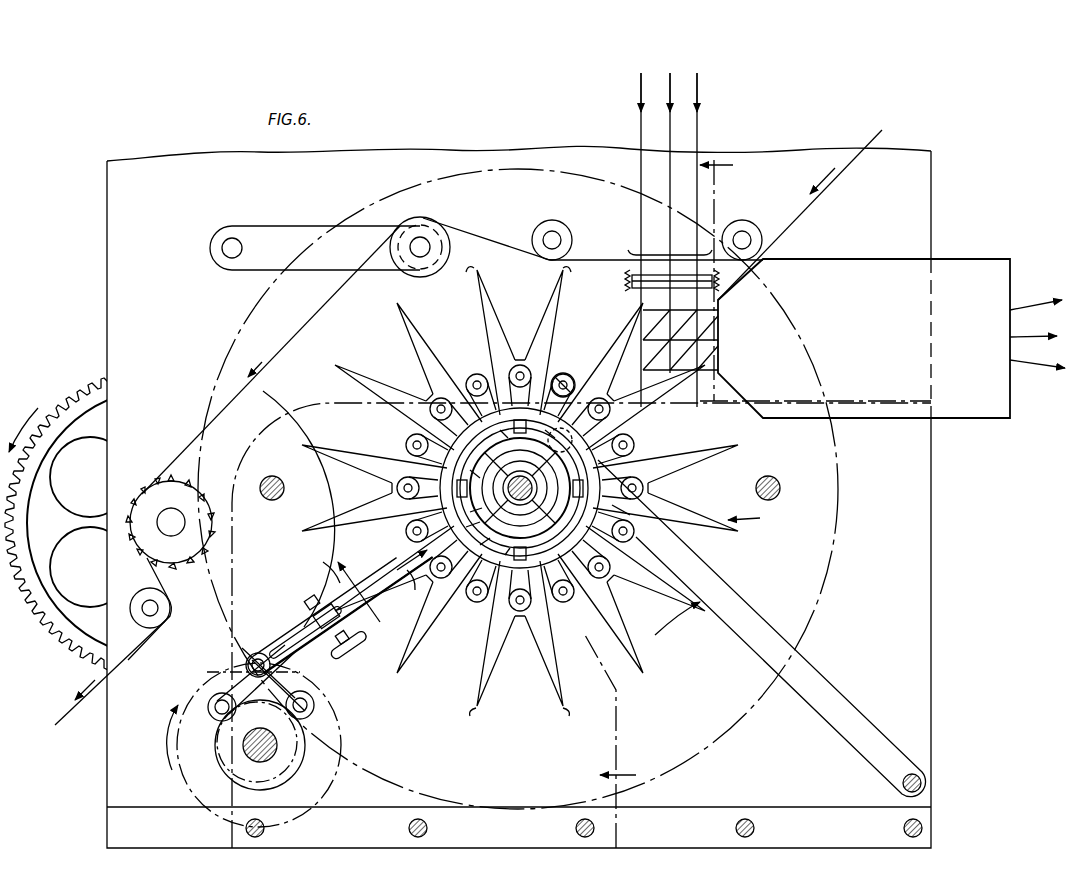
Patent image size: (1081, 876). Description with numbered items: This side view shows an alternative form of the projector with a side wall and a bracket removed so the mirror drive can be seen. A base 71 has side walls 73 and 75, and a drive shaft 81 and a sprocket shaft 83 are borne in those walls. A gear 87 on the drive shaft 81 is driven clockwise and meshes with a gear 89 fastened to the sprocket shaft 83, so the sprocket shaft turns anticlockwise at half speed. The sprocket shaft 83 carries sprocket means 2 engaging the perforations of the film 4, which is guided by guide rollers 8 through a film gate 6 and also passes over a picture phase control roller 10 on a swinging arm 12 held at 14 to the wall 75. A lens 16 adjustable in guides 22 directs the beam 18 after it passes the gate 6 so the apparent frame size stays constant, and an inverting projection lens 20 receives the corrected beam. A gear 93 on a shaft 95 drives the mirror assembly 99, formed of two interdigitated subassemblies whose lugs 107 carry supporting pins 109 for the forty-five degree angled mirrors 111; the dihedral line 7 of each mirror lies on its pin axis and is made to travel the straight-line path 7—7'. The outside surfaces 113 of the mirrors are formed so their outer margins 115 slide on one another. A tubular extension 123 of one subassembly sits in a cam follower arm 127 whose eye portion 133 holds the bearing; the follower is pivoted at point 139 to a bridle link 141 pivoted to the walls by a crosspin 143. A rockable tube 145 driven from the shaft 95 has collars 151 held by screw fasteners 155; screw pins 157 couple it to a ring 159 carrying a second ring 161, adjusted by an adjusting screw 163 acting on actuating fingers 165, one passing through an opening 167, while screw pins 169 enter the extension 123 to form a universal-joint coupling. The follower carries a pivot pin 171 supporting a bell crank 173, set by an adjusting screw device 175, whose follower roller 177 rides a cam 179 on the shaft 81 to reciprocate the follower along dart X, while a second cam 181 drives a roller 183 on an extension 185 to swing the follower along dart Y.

The sprocket means 2 is at (200, 505).
The film 4 is at (494, 248).
The film gate 6 is at (640, 250).
The dihedral line 7 is at (659, 504).
The end of straight-line path 7' is at (565, 367).
The guide rollers 8 is at (550, 222).
The picture phase control roller 10 is at (410, 225).
The swinging arm 12 is at (290, 228).
The arm mounting 14 is at (230, 258).
The lens 16 is at (640, 278).
The beam 18 is at (697, 141).
The inverting projection lens 20 is at (840, 258).
The guides 22 is at (625, 290).
The base 71 is at (732, 807).
The side wall 73 is at (845, 400).
The side wall 75 is at (118, 245).
The drive shaft 81 is at (275, 752).
The sprocket shaft 83 is at (170, 536).
The gear 87 is at (342, 742).
The gear 89 is at (72, 640).
The gear 93 is at (238, 336).
The shaft 95 is at (565, 512).
The mirror assembly 99 is at (754, 518).
The lugs 107 is at (398, 486).
The supporting pins 109 is at (478, 372).
The angled mirrors 111 is at (420, 355).
The outside surfaces 113 is at (470, 330).
The outer margins 115 is at (477, 270).
The tubular extension 123 is at (460, 515).
The cam follower arm 127 is at (402, 562).
The eye portion 133 is at (634, 518).
The pivot point 139 is at (575, 431).
The bridle link 141 is at (730, 595).
The crosspin 143 is at (925, 778).
The rockable tube 145 is at (489, 558).
The collars 151 is at (467, 545).
The screw fasteners 155 is at (458, 530).
The screw pins 157 is at (534, 496).
The ring 159 is at (544, 422).
The second ring 161 is at (460, 467).
The adjusting screw 163 is at (440, 395).
The actuating fingers 165 is at (412, 430).
The opening 167 is at (504, 422).
The screw pins 169 is at (512, 420).
The pivot pin 171 is at (260, 653).
The bell crank 173 is at (300, 676).
The adjusting screw device 175 is at (345, 646).
The follower roller 177 is at (315, 700).
The cams 179 is at (220, 762).
The cams 181 is at (218, 732).
The rollers 183 is at (209, 700).
The extensions 185 is at (230, 676).